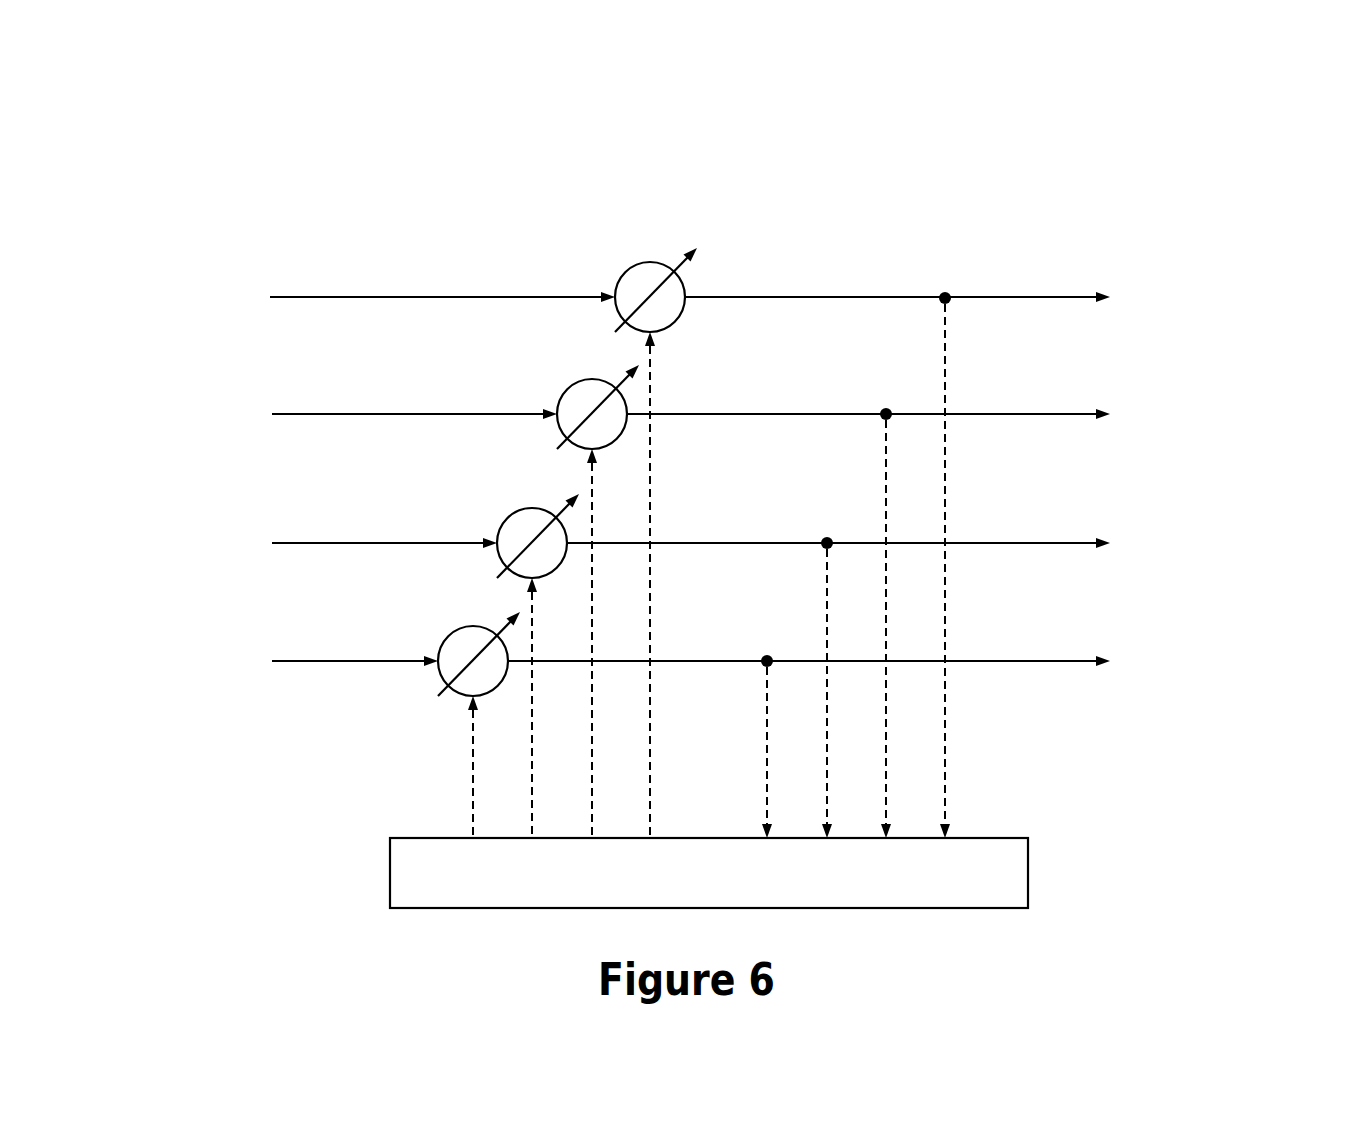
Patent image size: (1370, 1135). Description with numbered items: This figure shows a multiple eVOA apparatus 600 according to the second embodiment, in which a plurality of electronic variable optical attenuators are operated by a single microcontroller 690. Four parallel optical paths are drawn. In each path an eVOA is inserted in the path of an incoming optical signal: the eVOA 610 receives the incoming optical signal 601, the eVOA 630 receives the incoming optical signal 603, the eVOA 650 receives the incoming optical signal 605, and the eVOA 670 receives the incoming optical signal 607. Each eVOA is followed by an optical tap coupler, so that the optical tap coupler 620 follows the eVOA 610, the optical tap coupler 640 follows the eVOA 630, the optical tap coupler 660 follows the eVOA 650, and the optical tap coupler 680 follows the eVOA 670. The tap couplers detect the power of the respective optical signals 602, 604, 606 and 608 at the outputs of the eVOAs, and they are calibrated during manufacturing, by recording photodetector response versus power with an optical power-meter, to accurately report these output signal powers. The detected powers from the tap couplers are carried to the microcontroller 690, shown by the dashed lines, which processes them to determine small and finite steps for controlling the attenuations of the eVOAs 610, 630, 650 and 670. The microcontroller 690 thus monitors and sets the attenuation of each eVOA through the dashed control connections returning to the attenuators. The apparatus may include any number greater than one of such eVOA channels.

The multiple eVOA apparatus 600 is at (248, 153).
The incoming optical signal 601 is at (367, 302).
The optical signal output 602 is at (998, 292).
The incoming optical signal 603 is at (333, 407).
The optical signal output 604 is at (969, 409).
The incoming optical signal 605 is at (308, 531).
The optical signal output 606 is at (946, 539).
The incoming optical signal 607 is at (274, 636).
The optical signal output 608 is at (909, 658).
The eVOA 610 is at (636, 258).
The optical tap coupler 620 is at (908, 262).
The eVOA 630 is at (566, 383).
The optical tap coupler 640 is at (885, 378).
The eVOA 650 is at (530, 506).
The optical tap coupler 660 is at (825, 506).
The eVOA 670 is at (482, 624).
The optical tap coupler 680 is at (767, 626).
The microcontroller 690 is at (400, 836).